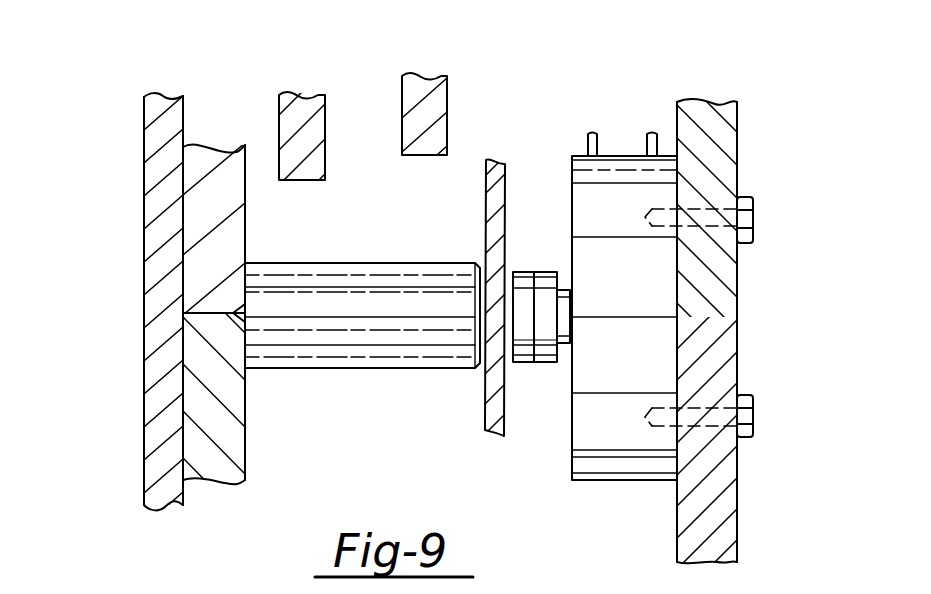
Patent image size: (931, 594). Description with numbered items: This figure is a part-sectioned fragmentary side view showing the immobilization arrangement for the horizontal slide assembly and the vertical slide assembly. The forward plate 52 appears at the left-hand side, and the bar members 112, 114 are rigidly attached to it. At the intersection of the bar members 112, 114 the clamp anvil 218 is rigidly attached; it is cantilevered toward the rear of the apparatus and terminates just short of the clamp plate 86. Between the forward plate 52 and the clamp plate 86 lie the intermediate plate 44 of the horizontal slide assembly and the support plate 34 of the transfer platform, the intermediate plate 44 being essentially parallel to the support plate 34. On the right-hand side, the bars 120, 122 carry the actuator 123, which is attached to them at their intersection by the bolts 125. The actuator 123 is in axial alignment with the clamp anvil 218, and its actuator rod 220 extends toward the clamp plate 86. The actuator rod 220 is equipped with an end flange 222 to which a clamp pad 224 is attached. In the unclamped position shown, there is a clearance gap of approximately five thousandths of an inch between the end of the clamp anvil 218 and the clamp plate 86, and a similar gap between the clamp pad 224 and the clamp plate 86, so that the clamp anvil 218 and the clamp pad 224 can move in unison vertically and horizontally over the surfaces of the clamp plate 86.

The forward plate 52 is at (144, 133).
The intermediate plate 44 is at (300, 93).
The support plate 34 is at (425, 74).
The clamp plate 86 is at (495, 162).
The bar member 112 is at (245, 220).
The bar member 114 is at (245, 472).
The clamp anvil 218 is at (354, 263).
The clamp pad 224 is at (532, 272).
The end flange 222 is at (547, 365).
The actuator rod 220 is at (562, 292).
The actuator 123 is at (622, 482).
The bar 120 is at (740, 275).
The bar 122 is at (740, 375).
The bolts 125 is at (752, 197).